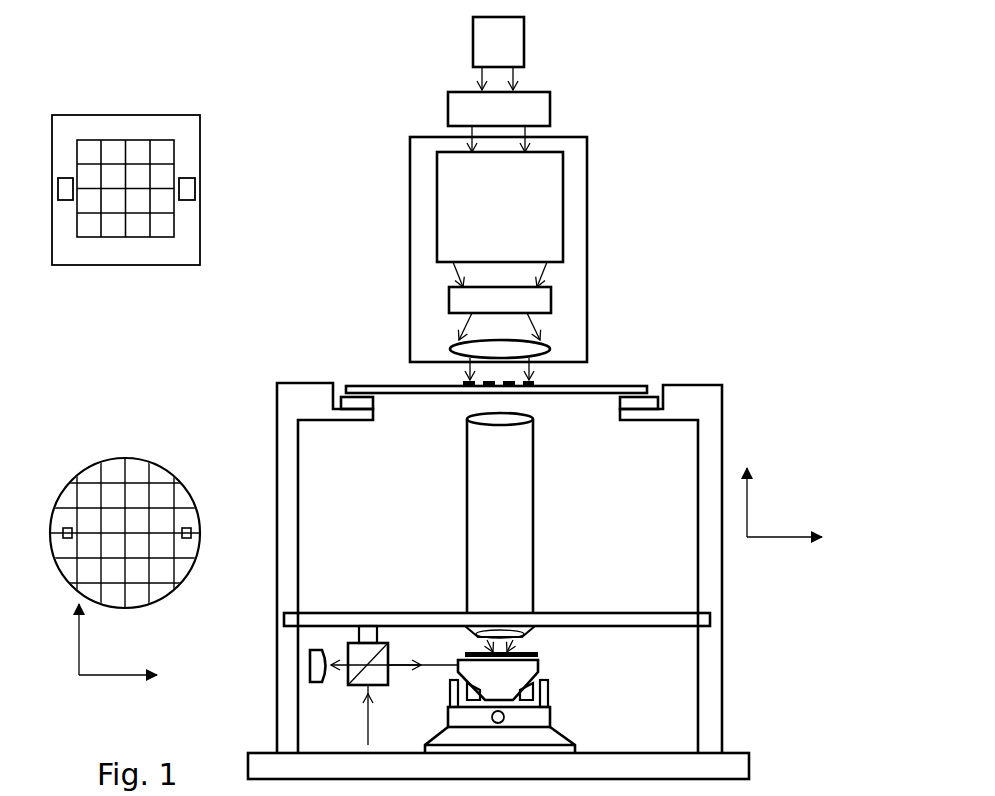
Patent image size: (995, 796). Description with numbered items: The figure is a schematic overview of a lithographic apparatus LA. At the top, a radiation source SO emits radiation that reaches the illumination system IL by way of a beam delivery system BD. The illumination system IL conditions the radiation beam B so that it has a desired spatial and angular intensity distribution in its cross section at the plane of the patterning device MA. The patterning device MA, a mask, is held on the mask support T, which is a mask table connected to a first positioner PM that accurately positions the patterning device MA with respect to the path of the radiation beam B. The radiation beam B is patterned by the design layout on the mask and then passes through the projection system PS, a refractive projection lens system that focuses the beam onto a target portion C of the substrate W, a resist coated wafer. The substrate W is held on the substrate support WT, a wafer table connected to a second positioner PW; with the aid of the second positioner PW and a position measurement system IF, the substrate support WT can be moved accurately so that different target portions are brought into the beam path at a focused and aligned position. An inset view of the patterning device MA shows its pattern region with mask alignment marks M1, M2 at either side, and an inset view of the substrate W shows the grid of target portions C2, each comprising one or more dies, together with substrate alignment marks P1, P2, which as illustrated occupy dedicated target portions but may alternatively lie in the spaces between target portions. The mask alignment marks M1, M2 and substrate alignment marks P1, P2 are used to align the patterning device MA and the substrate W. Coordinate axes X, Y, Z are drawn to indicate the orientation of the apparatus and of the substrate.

The lithographic apparatus LA is at (741, 285).
The radiation source SO is at (525, 48).
The beam delivery system BD is at (550, 110).
The illumination system IL is at (587, 172).
The patterning device MA is at (215, 219).
The mask alignment mark M1 is at (188, 177).
The mask alignment mark M2 is at (66, 177).
The target portion C is at (116, 207).
The target portions on substrate C2 is at (125, 533).
The mask support T is at (632, 385).
The radiation beam B is at (500, 373).
The first positioner PM is at (660, 410).
The projection system PS is at (533, 503).
The substrate W is at (216, 530).
The substrate alignment mark P1 is at (66, 527).
The substrate alignment mark P2 is at (187, 527).
The substrate support WT is at (540, 664).
The second positioner PW is at (552, 718).
The position measurement system IF is at (341, 691).
The X axis X is at (452, 603).
The Y axis Y is at (64, 639).
The Z axis Z is at (758, 491).